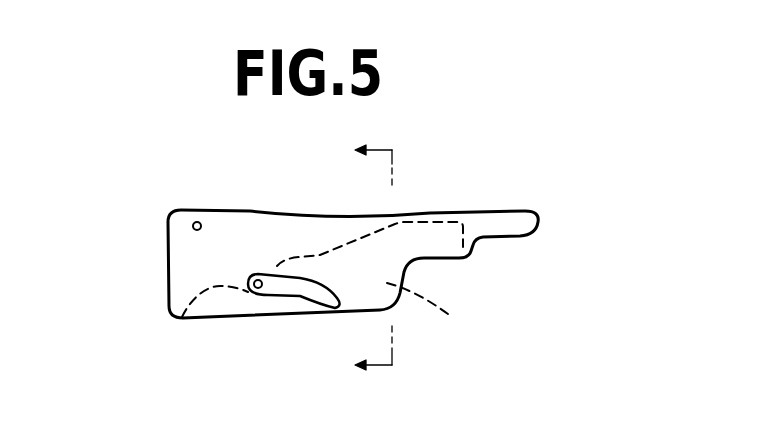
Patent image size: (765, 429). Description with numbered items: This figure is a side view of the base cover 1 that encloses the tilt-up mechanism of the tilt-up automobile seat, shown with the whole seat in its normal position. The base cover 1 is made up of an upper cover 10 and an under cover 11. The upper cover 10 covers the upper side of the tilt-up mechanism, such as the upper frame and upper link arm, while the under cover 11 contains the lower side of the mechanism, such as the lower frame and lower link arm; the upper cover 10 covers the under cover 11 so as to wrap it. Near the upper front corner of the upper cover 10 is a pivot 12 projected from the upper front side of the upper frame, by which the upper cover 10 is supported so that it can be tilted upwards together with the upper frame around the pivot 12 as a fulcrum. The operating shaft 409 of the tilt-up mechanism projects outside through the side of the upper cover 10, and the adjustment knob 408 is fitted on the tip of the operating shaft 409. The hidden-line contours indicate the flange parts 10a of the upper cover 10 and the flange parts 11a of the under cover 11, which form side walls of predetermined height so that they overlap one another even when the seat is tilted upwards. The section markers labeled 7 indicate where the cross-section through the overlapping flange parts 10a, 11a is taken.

The base cover 1 is at (442, 212).
The section line 7- 7 is at (362, 259).
The upper cover 10 is at (168, 249).
The flange parts 10a is at (275, 228).
The under cover 11 is at (228, 303).
The flange parts 11a is at (429, 311).
The pivot 12 is at (200, 221).
The adjustment knob 408 is at (302, 293).
The operating shaft 409 is at (263, 293).